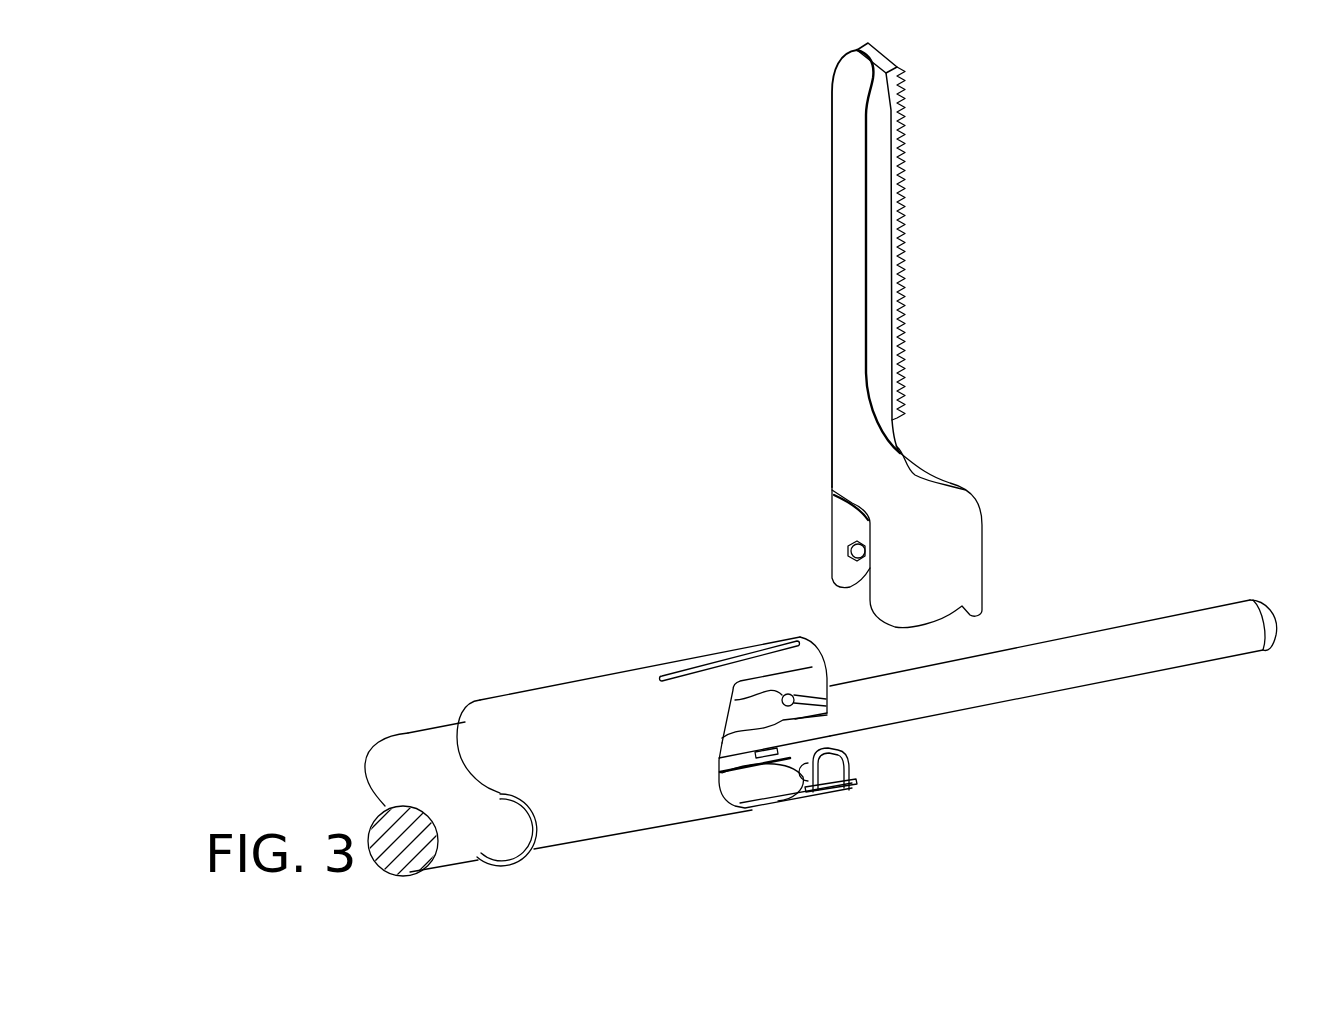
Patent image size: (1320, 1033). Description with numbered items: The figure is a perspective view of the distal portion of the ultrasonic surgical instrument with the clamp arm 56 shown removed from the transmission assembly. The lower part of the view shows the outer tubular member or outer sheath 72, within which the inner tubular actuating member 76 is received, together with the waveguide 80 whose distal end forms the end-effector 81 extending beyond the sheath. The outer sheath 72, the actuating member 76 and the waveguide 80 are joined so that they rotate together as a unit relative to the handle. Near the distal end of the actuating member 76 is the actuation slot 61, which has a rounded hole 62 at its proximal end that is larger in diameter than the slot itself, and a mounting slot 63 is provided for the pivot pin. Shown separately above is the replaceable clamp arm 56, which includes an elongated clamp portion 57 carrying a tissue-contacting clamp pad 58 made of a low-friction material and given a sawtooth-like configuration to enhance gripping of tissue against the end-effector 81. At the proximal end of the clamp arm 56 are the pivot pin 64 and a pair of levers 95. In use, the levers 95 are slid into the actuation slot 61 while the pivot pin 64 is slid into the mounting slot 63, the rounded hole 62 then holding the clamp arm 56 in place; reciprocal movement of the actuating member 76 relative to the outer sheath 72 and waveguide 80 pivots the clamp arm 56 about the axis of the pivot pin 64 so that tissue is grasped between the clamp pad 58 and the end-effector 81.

The clamp arm 56 is at (800, 287).
The elongated clamp portion 57 is at (845, 158).
The clamp pad 58 is at (903, 283).
The levers 95 is at (984, 590).
The pivot pin 64 is at (850, 553).
The waveguide 80 is at (402, 750).
The outer sheath 72 is at (565, 703).
The rounded hole 62 is at (730, 707).
The mounting slot 63 is at (823, 668).
The actuation slot 61 is at (843, 767).
The inner tubular actuating member 76 is at (750, 787).
The end-effector 81 is at (1203, 637).